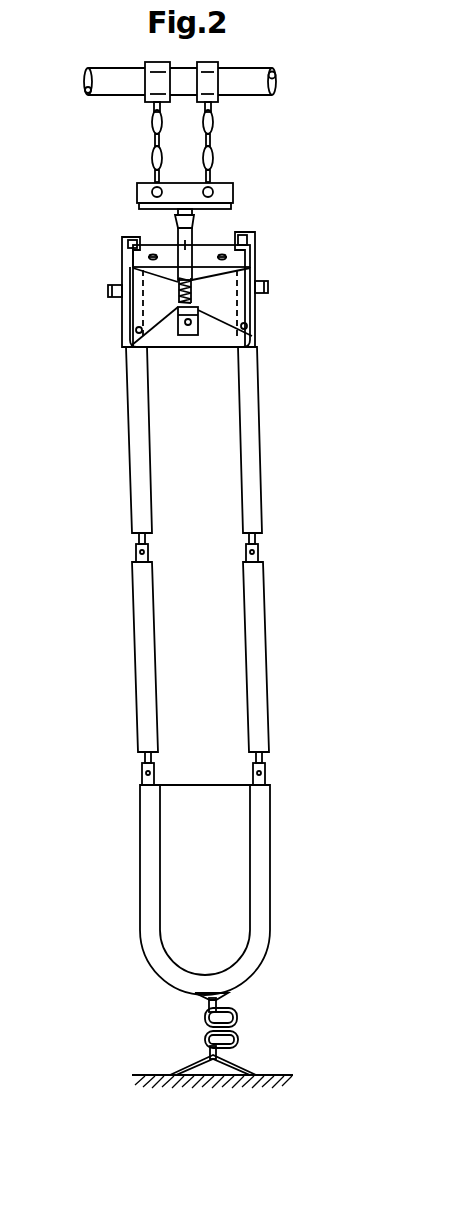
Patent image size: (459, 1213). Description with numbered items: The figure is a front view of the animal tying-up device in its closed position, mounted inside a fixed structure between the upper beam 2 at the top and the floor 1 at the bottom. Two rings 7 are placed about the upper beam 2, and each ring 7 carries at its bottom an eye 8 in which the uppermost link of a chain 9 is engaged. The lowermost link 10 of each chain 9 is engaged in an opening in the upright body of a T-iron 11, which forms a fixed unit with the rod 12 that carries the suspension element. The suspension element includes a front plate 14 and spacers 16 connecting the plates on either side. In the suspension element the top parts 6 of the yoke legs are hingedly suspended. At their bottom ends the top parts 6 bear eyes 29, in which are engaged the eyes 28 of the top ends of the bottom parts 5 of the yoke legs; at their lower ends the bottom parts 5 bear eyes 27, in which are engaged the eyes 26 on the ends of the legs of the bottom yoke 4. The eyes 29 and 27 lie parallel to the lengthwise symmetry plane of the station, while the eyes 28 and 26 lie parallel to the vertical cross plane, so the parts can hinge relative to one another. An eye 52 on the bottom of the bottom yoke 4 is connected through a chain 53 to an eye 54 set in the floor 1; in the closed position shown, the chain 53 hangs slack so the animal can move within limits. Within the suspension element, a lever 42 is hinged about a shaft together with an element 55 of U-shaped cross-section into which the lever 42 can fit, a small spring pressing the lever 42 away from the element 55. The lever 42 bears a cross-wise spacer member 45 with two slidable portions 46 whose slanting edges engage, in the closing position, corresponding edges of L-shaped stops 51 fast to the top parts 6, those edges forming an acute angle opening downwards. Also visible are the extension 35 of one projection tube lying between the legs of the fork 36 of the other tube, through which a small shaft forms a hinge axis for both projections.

The floor 1 is at (153, 1075).
The upper beam 2 is at (255, 72).
The bottom yoke 4 is at (265, 860).
The bottom part 5 is at (142, 648).
The top part 6 is at (253, 435).
The ring 7 is at (157, 63).
The eye 8 is at (208, 103).
The chain 9 is at (213, 128).
The lowermost link 10 is at (150, 184).
The T-iron 11 is at (230, 183).
The rod 12 is at (162, 212).
The front plate 14 is at (137, 315).
The spacer 16 is at (267, 288).
The eye 26 is at (143, 775).
The eye 27 is at (260, 757).
The eye 28 is at (138, 558).
The eye 29 is at (257, 539).
The extension 35 is at (257, 347).
The fork 36 is at (177, 327).
The lever 42 is at (190, 222).
The cross-wise spacer member 45 is at (163, 250).
The slidable portion 46 is at (245, 258).
The stop 51 is at (252, 235).
The eye 52 is at (228, 993).
The chain 53 is at (233, 1018).
The eye 54 is at (237, 1060).
The element 55 is at (177, 300).